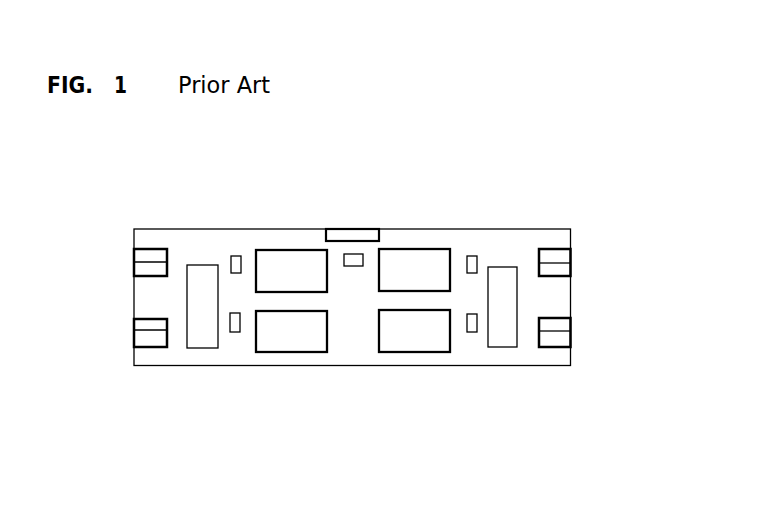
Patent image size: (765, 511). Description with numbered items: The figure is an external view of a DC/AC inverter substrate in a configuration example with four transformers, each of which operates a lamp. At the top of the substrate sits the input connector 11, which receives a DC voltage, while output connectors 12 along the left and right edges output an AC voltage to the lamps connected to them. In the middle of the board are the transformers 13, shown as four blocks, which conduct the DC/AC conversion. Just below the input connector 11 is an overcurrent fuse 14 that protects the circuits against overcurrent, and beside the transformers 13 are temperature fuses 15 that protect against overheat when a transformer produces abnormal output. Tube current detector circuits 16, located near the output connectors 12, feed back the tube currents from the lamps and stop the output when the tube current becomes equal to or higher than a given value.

The input connector 11 is at (345, 234).
The output connectors 12 is at (142, 263).
The transformers 13 is at (378, 292).
The overcurrent fuse 14 is at (358, 256).
The temperature fuses 15 is at (468, 313).
The tube current detector circuits 16 is at (497, 343).